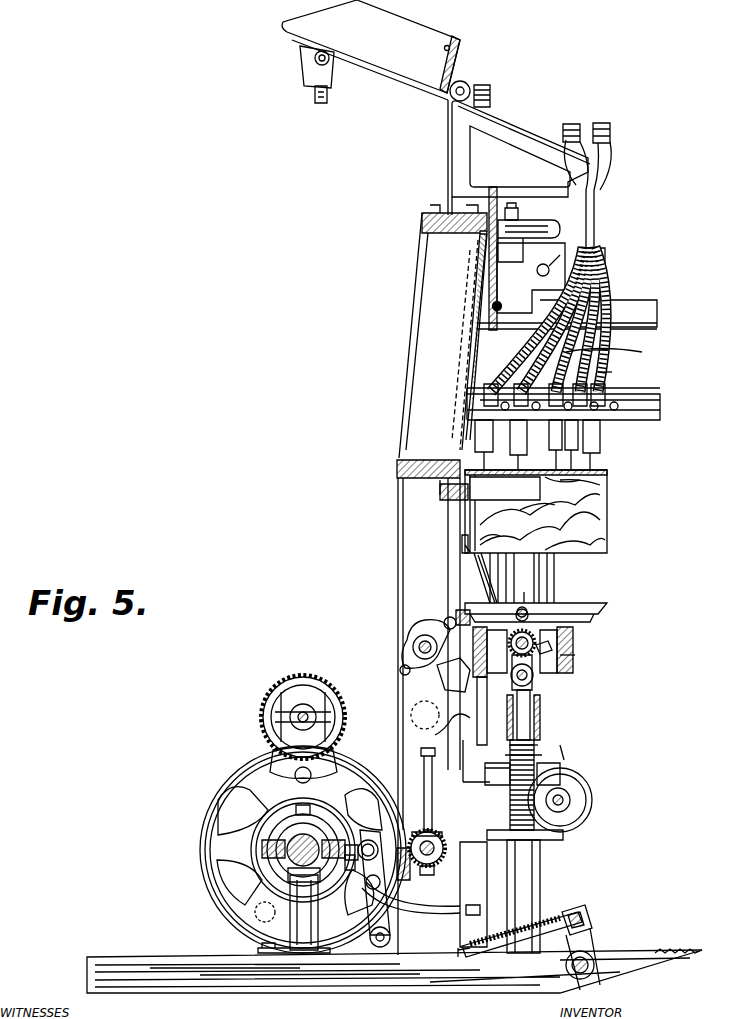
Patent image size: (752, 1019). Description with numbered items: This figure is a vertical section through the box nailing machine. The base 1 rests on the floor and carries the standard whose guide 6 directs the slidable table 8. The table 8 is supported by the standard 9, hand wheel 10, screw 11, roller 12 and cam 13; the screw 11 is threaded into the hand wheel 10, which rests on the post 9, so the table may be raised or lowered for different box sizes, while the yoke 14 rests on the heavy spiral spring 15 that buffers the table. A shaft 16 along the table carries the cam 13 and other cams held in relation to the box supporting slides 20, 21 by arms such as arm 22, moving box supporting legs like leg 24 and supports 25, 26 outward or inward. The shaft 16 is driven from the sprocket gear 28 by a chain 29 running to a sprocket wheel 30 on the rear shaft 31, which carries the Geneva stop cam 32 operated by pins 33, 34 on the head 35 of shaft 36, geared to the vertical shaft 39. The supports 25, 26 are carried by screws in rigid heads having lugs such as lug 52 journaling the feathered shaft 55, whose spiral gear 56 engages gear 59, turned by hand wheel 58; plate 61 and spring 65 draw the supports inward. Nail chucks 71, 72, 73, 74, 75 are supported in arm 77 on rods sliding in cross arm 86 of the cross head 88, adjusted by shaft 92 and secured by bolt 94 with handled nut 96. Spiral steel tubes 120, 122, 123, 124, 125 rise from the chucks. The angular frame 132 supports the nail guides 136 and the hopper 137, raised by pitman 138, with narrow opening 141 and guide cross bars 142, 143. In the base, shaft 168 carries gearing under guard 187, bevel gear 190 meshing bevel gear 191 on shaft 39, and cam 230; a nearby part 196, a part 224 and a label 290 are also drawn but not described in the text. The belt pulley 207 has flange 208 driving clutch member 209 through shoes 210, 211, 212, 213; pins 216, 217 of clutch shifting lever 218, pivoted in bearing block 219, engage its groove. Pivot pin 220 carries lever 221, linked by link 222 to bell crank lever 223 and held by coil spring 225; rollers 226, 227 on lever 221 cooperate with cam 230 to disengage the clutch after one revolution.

The base 1 is at (125, 970).
The guide 6 is at (453, 545).
The slidable table 8 is at (573, 660).
The standard 9 is at (455, 400).
The hand wheel 10 is at (560, 845).
The screw 11 is at (510, 818).
The roller 12 is at (540, 683).
The cam 13 is at (530, 635).
The yoke 14 is at (540, 705).
The spiral spring 15 is at (542, 748).
The shaft 16 is at (552, 646).
The box supporting slide 20 is at (570, 612).
The box supporting slide 21 is at (524, 604).
The arm 22 is at (575, 652).
The box supporting leg 24 is at (495, 590).
The box support 25 is at (555, 578).
The box support 26 is at (608, 548).
The sprocket gear 28 is at (511, 617).
The chain 29 is at (484, 711).
The sprocket wheel 30 is at (425, 715).
The shaft 31 is at (445, 680).
The Geneva stop cam 32 is at (448, 731).
The pin 33 is at (445, 620).
The pin 34 is at (400, 670).
The head 35 is at (408, 633).
The shaft 36 is at (420, 647).
The vertically extending shaft 39 is at (424, 765).
The depending lug 52 is at (592, 803).
The shaft 55 is at (590, 832).
The spiral gear 56 is at (575, 792).
The hand wheel 58 is at (592, 812).
The spiral gear 59 is at (510, 803).
The upwardly extending plate 61 is at (540, 730).
The spiral spring 65 is at (565, 762).
The nail chuck 71 is at (600, 450).
The nail chuck 72 is at (580, 462).
The nail chuck 73 is at (552, 458).
The nail chuck 74 is at (520, 448).
The nail chuck 75 is at (488, 440).
The chuck supporting arm 77 is at (660, 397).
The cross arm 86 is at (625, 318).
The cross head 88 is at (531, 278).
The shaft 92 is at (545, 270).
The bolt 94 is at (511, 203).
The handled nut 96 is at (520, 232).
The spiral steel tube 120 is at (508, 313).
The spiral steel tube 122 is at (600, 292).
The spiral steel tube 123 is at (617, 355).
The spiral steel tube 124 is at (622, 373).
The spiral steel tube 125 is at (616, 351).
The angular frame 132 is at (451, 163).
The nail guide 136 is at (512, 124).
The nail hopper 137 is at (371, 50).
The pitman 138 is at (313, 97).
The narrow opening 141 is at (462, 82).
The cross bar 142 is at (484, 85).
The cross bar 143 is at (575, 123).
The shaft 168 is at (435, 870).
The guard 187 is at (300, 715).
The bevel gear 190 is at (445, 855).
The bevel gear 191 is at (442, 838).
The gear 196 is at (262, 712).
The belt pulley 207 is at (210, 880).
The flange 208 is at (237, 815).
The slidable clutch member 209 is at (298, 810).
The clutch shoe 210 is at (265, 865).
The clutch shoe 211 is at (338, 805).
The clutch shoe 212 is at (352, 845).
The clutch shoe 213 is at (264, 912).
The pin 216 is at (278, 840).
The pin 217 is at (310, 850).
The clutch shifting lever 218 is at (322, 905).
The bearing block 219 is at (262, 948).
The pivot pin 220 is at (380, 947).
The lever 221 is at (398, 940).
The link 222 is at (402, 900).
The bell crank lever 223 is at (592, 930).
The ramp 224 is at (675, 949).
The coil spring 225 is at (512, 950).
The roller 226 is at (380, 840).
The roller 227 is at (320, 876).
The cam 230 is at (415, 864).
The label plate 290 is at (505, 488).